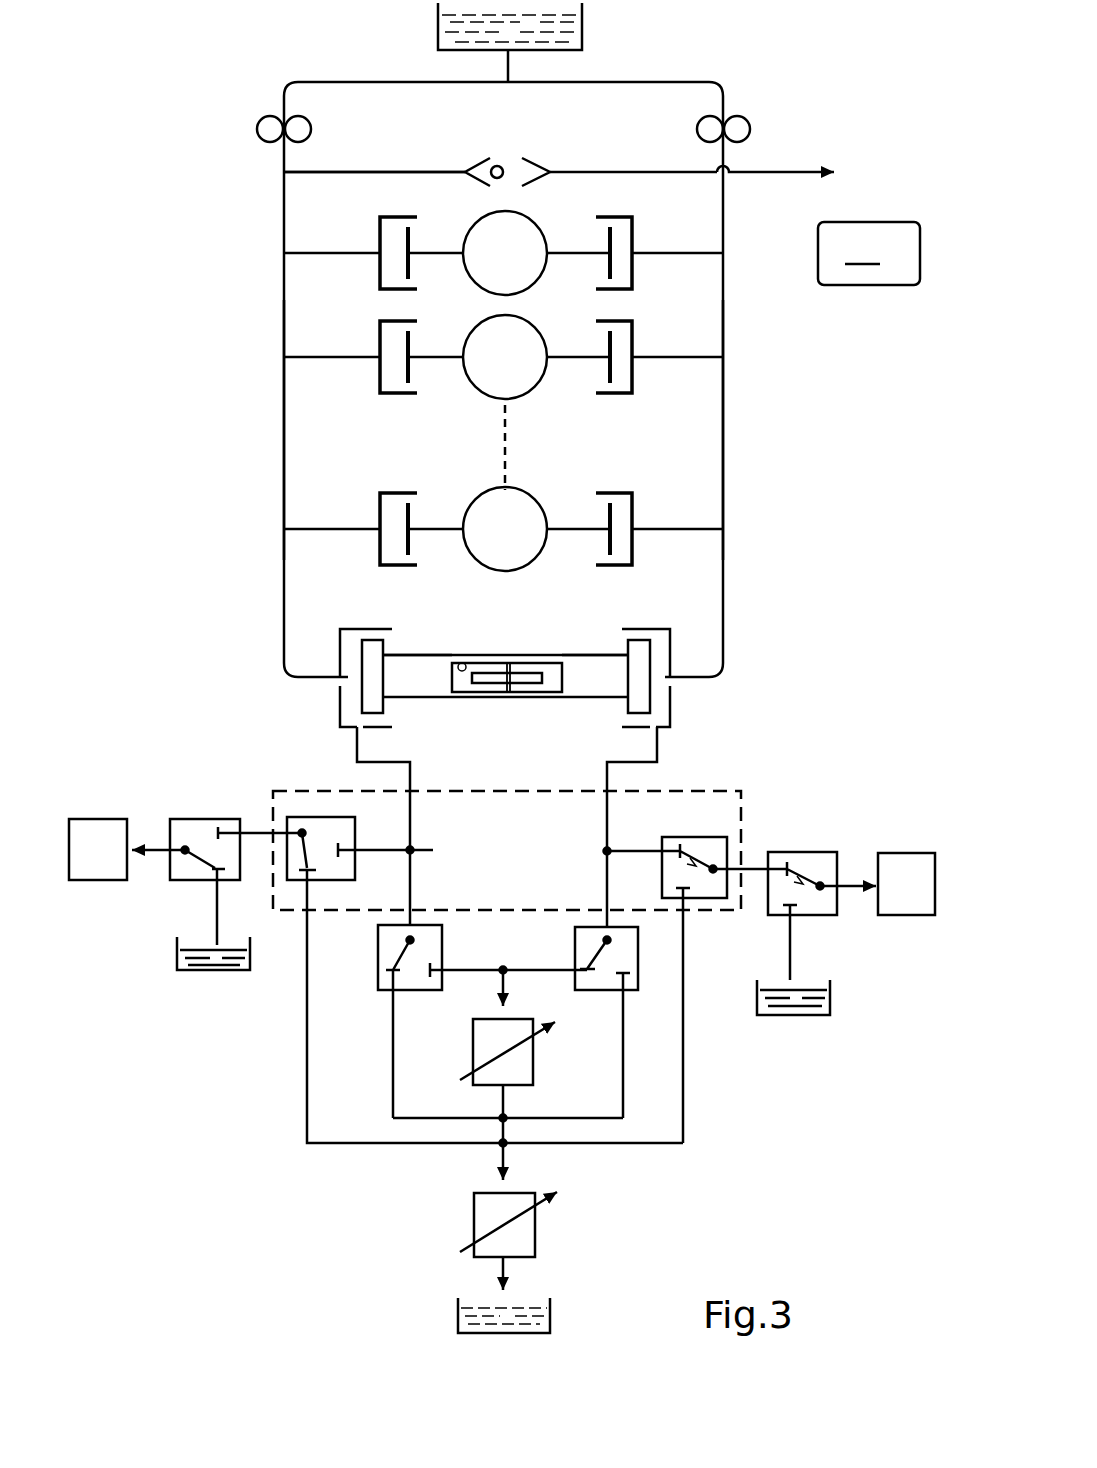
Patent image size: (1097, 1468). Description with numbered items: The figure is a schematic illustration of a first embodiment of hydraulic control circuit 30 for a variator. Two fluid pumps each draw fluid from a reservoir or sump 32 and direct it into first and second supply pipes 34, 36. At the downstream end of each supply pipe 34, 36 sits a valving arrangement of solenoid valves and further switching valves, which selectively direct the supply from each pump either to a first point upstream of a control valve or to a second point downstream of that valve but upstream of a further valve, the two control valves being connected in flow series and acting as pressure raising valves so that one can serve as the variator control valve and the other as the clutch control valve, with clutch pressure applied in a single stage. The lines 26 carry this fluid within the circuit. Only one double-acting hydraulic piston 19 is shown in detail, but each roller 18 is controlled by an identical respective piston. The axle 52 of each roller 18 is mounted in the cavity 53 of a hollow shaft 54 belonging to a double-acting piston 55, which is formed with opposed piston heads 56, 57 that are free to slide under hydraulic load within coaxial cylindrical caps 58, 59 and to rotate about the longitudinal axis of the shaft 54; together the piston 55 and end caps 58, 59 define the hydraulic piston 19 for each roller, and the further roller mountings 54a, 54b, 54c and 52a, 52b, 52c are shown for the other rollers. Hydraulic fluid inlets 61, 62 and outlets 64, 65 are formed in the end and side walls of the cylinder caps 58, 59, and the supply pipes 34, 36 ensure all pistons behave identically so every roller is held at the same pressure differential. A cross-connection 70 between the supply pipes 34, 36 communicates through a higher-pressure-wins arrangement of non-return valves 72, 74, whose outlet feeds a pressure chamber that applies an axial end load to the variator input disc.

The roller 18 is at (527, 272).
The double-acting hydraulic piston 19 is at (638, 216).
The pressure line 26 is at (394, 1088).
The control circuit 30 is at (777, 380).
The reservoir or sump 32 is at (583, 28).
The first supply pipe 34 is at (284, 419).
The second supply pipe 36 is at (723, 438).
The axle 52 is at (512, 664).
The right bearing block a 52a is at (632, 506).
The right bearing block b 52b is at (632, 336).
The right bearing block c 52c is at (632, 232).
The cavity 53 is at (466, 664).
The hollow shaft 54 is at (415, 652).
The left bearing block a 54a is at (380, 515).
The left bearing block b 54b is at (379, 335).
The left bearing block c 54c is at (379, 231).
The double-acting piston 55 is at (579, 638).
The piston head 56 is at (313, 622).
The piston head 57 is at (640, 658).
The cylindrical cap 58 is at (365, 626).
The cylindrical cap 59 is at (640, 626).
The hydraulic fluid inlet 61 is at (334, 684).
The hydraulic fluid inlet 62 is at (681, 686).
The hydraulic fluid outlet 64 is at (350, 738).
The hydraulic fluid outlet 65 is at (662, 740).
The cross-connection 70 is at (343, 170).
The non-return valve 72 is at (476, 164).
The non-return valve 74 is at (540, 165).